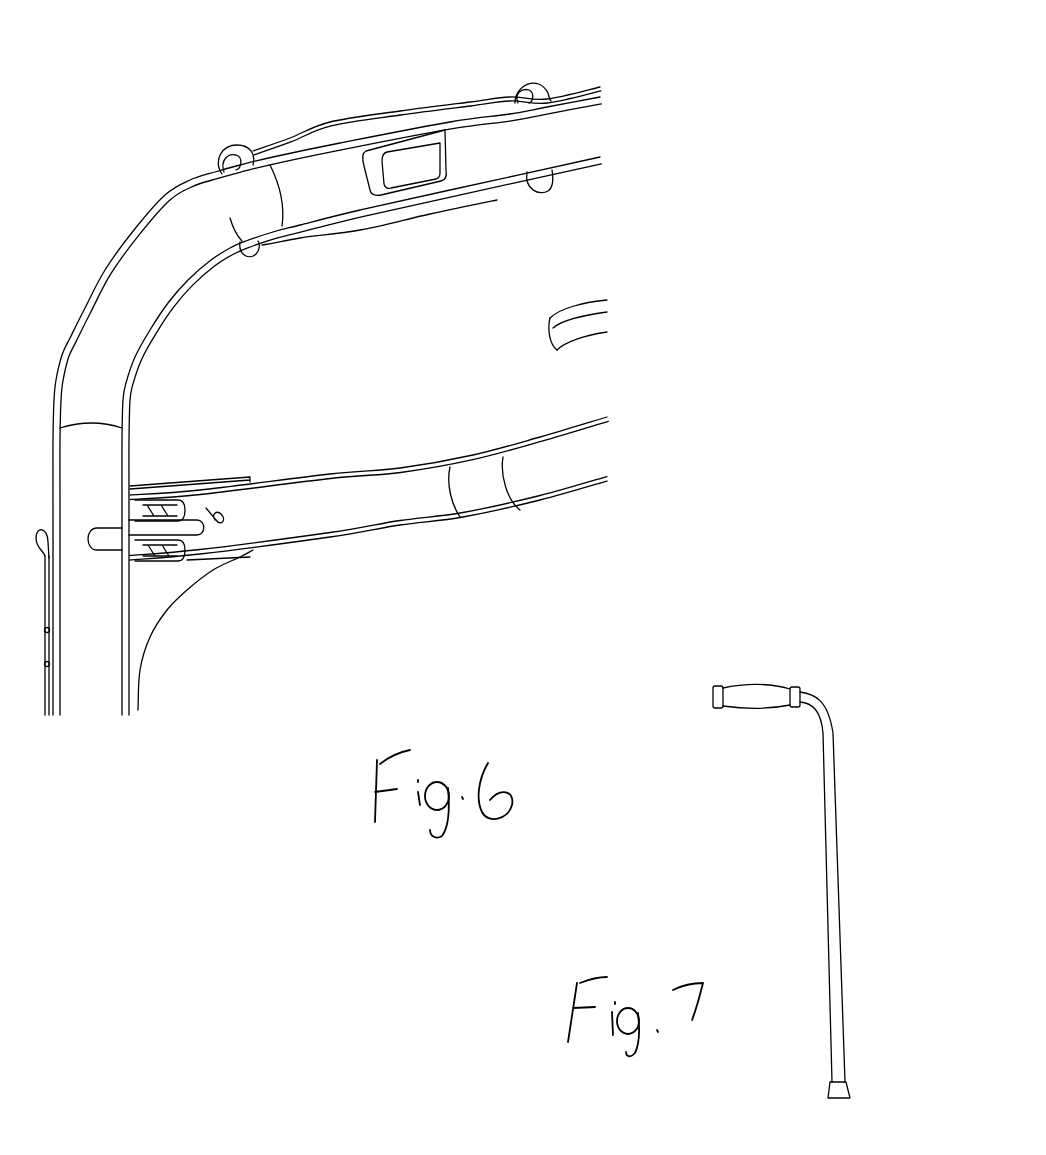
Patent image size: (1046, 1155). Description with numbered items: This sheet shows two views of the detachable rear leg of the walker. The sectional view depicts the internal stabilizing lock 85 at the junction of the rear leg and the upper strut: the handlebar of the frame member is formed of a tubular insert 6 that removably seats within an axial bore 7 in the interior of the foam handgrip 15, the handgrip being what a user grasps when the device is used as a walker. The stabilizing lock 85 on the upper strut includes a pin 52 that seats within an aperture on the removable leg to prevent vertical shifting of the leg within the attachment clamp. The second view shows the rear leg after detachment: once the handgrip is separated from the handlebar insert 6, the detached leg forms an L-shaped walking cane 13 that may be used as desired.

In FIG. 6, the tubular insert 6 is at (450, 153).
In FIG. 6, the axial bore 7 is at (427, 137).
In FIG. 6, the foam handgrip 15 is at (467, 98).
In FIG. 6, the stabilizing lock 85 is at (170, 495).
In FIG. 6, the pin 52 is at (105, 527).
In FIG. 7, the L-shaped walking cane 13 is at (830, 685).